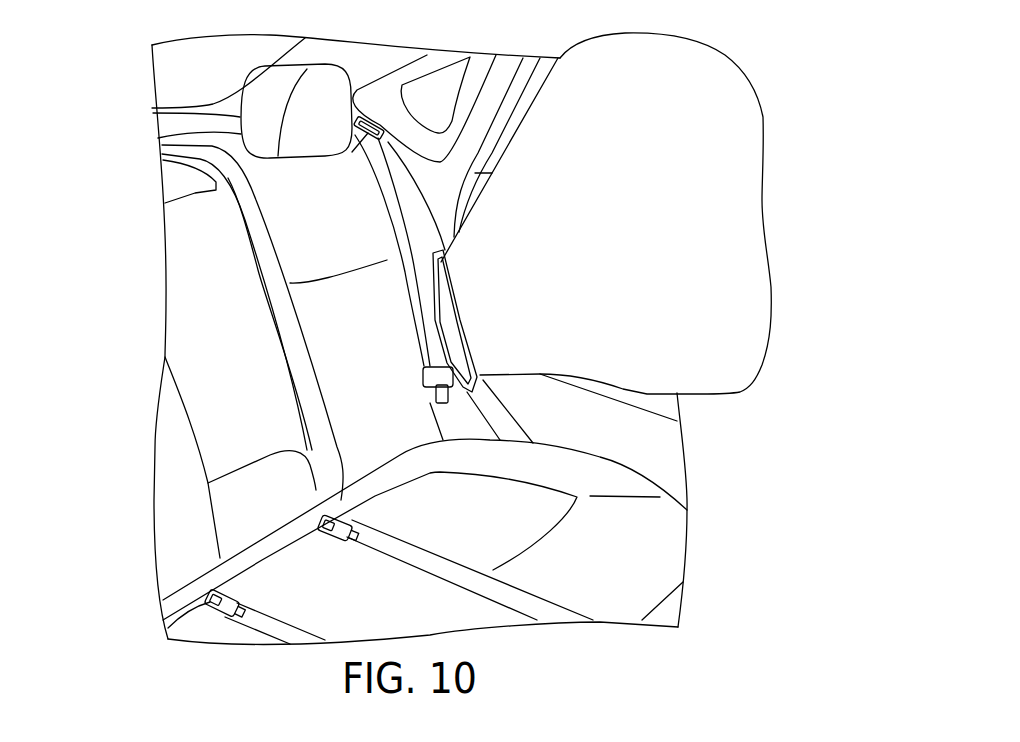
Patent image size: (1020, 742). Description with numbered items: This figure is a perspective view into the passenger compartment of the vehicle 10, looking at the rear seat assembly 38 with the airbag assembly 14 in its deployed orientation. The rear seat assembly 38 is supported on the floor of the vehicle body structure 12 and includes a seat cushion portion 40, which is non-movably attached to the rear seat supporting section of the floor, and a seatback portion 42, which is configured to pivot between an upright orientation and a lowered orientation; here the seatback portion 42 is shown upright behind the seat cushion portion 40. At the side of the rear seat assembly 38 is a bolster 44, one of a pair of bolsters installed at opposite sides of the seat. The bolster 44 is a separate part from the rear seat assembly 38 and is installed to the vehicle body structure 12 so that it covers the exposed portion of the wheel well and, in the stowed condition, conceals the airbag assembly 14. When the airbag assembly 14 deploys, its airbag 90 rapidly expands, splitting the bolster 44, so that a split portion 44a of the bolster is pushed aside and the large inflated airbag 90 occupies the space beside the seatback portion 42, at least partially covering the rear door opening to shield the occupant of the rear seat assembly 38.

The vehicle 10 is at (112, 88).
The vehicle body structure 12 is at (253, 66).
The airbag assembly 14 is at (743, 59).
The rear seat assembly 38 is at (185, 127).
The seat cushion portion 40 is at (637, 550).
The seatback portion 42 is at (268, 255).
The bolster 44 is at (397, 240).
The seat belt anchor strip 44a is at (445, 327).
The airbag 90 is at (680, 73).